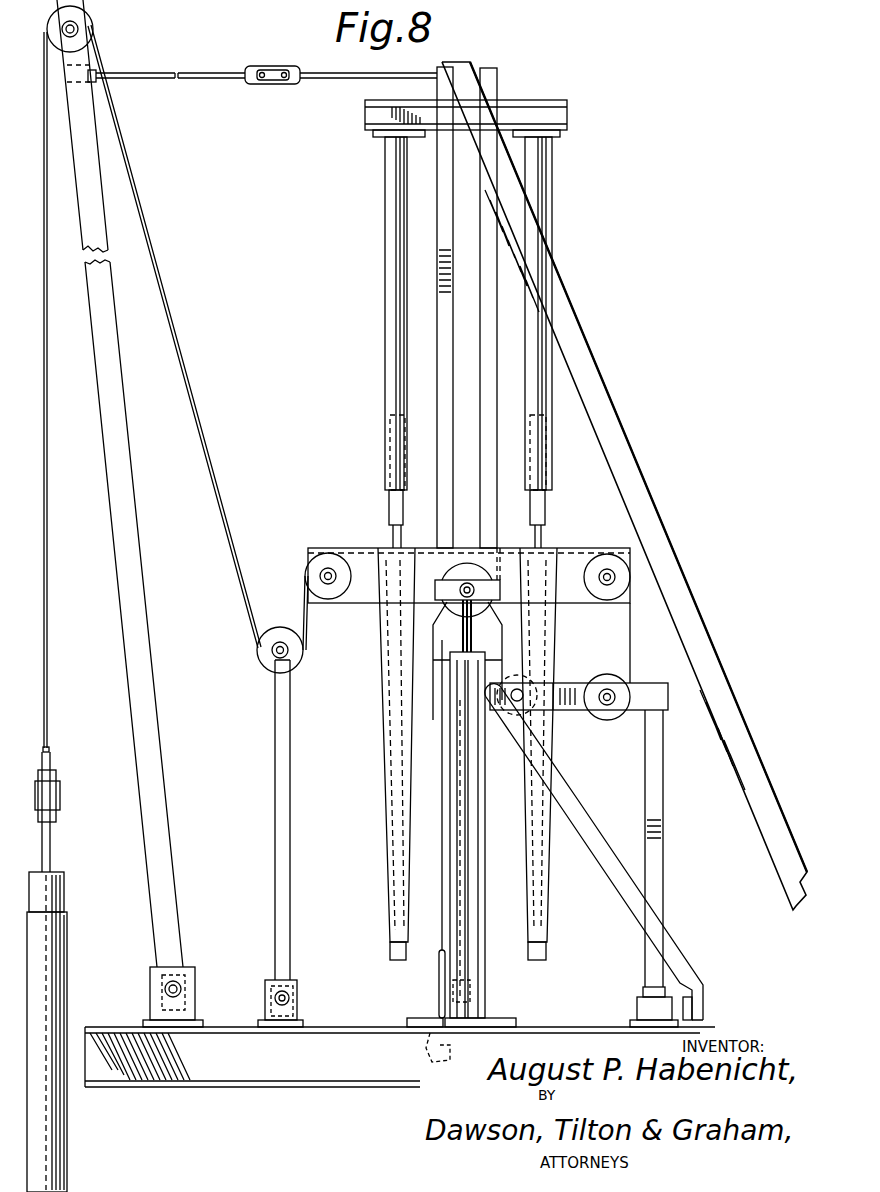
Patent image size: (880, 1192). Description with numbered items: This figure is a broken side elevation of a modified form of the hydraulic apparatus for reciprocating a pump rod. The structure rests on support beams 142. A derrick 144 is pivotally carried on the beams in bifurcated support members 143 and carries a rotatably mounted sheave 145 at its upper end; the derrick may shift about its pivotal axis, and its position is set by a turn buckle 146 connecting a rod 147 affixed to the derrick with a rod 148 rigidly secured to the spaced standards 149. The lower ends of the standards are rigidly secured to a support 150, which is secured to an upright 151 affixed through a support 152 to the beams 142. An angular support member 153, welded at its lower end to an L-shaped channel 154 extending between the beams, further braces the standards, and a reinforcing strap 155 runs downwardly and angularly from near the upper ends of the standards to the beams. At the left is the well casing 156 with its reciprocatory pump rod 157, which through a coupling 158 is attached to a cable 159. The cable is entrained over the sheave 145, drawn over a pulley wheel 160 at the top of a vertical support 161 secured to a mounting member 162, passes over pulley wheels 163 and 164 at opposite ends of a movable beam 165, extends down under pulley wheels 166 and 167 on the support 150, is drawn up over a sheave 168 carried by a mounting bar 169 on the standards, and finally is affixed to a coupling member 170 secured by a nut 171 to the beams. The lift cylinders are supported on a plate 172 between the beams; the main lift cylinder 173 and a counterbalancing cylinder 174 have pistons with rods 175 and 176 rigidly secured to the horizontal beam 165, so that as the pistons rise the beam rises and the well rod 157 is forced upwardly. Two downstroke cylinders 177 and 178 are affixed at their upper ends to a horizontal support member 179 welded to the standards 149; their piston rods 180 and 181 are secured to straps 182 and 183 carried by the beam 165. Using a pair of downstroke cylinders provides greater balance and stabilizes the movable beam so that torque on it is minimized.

The support beams 142 is at (257, 1085).
The bifurcated support members 143 is at (190, 980).
The derrick 144 is at (160, 851).
The sheave 145 is at (92, 32).
The turn buckle 146 is at (262, 84).
The rod 147 is at (182, 80).
The rod 148 is at (330, 80).
The standards 149 is at (482, 397).
The support 150 is at (575, 690).
The upright 151 is at (660, 800).
The support 152 is at (636, 1010).
The angular support member 153 is at (602, 855).
The L-shaped channel 154 is at (700, 1008).
The reinforcing strap 155 is at (622, 441).
The well casing 156 is at (62, 970).
The pump rod 157 is at (50, 838).
The coupling 158 is at (58, 793).
The cable 159 is at (49, 656).
The pulley wheel 160 is at (258, 663).
The vertical support 161 is at (291, 843).
The mounting member 162 is at (298, 998).
The pulley wheel 163 is at (306, 573).
The pulley wheel 164 is at (604, 600).
The movable beam 165 is at (360, 600).
The pulley wheel 166 is at (607, 720).
The pulley wheel 167 is at (516, 738).
The sheave 168 is at (468, 572).
The mounting bar 169 is at (503, 570).
The coupling member 170 is at (438, 988).
The nut 171 is at (438, 1055).
The plate 172 is at (510, 1018).
The main lift cylinder 173 is at (480, 990).
The counterbalancing cylinder 174 is at (475, 960).
The piston rod 175 is at (472, 640).
The piston rod 176 is at (460, 628).
The downstroke cylinder 177 is at (540, 177).
The downstroke cylinder 178 is at (388, 240).
The horizontal support member 179 is at (557, 116).
The piston rod 180 is at (545, 546).
The piston rod 181 is at (394, 530).
The strap 182 is at (547, 921).
The strap 183 is at (387, 890).